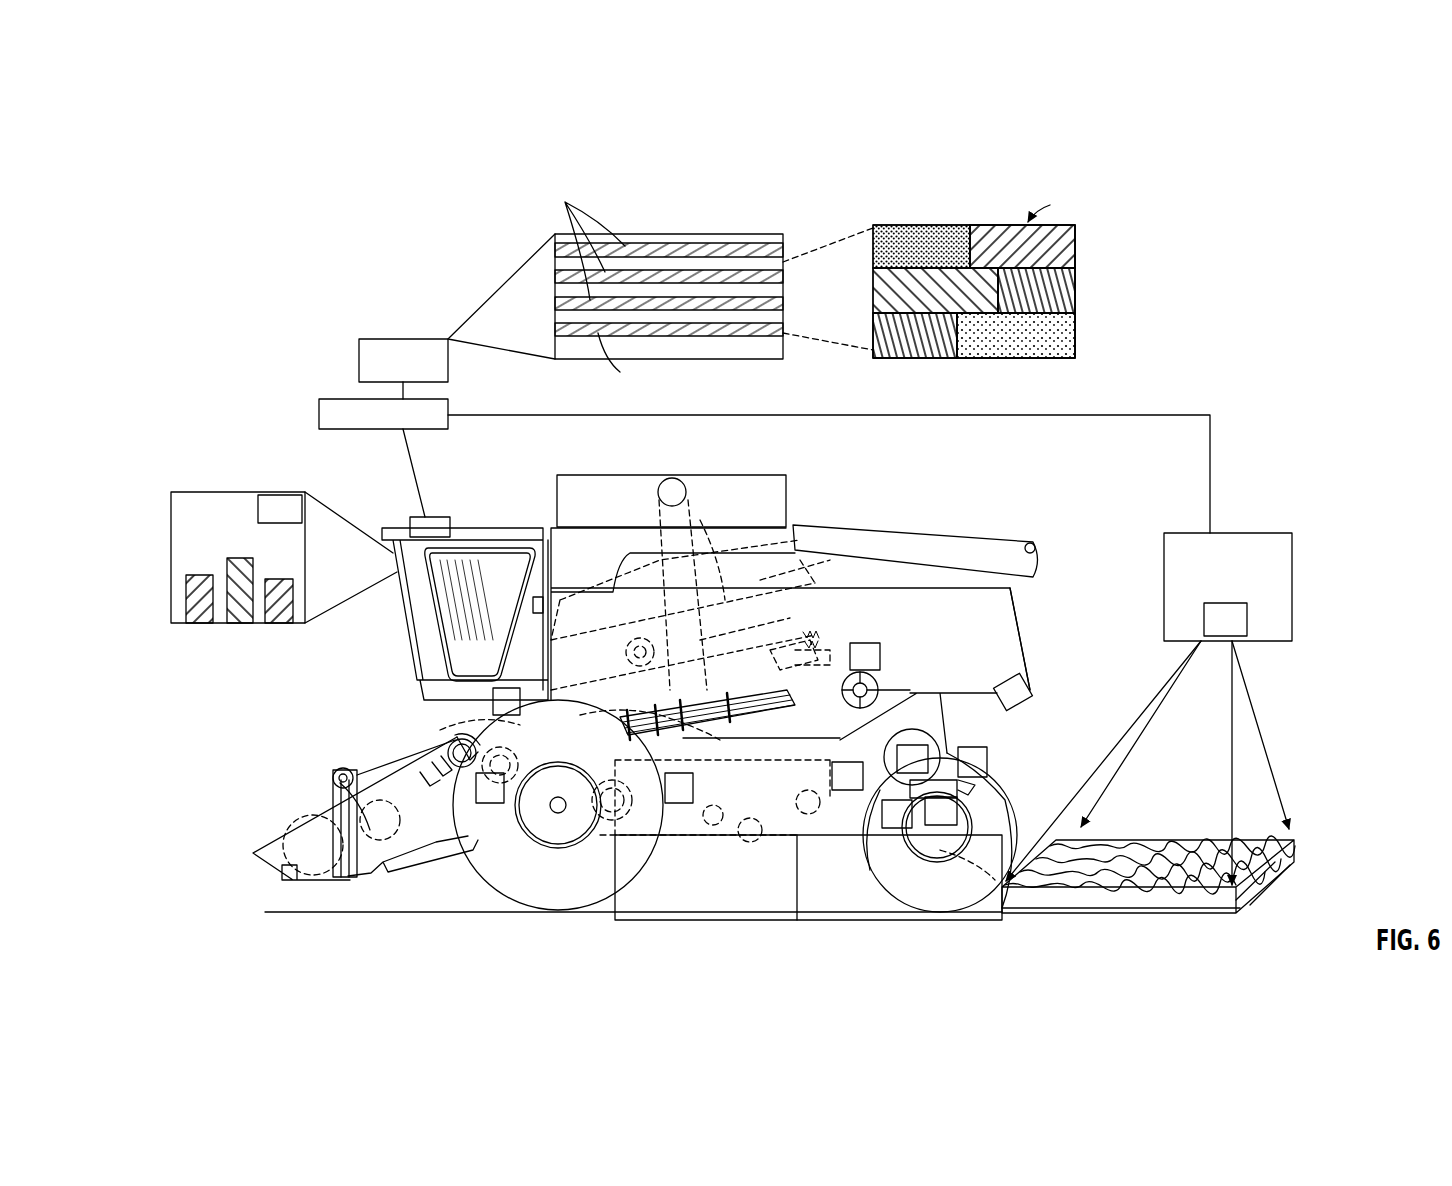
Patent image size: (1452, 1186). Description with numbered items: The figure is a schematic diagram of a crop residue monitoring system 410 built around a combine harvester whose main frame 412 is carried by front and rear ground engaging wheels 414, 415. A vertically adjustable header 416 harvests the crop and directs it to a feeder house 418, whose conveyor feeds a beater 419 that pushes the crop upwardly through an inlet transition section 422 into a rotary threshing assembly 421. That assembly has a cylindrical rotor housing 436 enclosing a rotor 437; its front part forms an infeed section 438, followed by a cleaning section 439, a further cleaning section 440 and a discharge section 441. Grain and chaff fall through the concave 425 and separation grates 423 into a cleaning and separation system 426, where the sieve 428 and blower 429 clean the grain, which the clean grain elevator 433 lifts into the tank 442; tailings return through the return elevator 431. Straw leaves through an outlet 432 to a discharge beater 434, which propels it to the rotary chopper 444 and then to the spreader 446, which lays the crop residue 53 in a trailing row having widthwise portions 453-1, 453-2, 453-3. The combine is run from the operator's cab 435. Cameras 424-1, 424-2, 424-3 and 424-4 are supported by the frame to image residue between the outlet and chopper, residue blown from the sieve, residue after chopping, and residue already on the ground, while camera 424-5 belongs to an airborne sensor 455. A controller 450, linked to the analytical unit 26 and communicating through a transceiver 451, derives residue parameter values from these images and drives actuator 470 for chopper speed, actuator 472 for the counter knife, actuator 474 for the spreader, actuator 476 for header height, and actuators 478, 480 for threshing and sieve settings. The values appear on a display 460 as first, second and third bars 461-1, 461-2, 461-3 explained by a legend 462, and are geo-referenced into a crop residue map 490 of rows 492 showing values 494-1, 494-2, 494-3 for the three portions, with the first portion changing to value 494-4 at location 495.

The analytical unit 26 is at (484, 445).
The crop residue 53 is at (1160, 840).
The crop residue monitoring system 410 is at (312, 238).
The main frame 412 is at (1023, 632).
The front ground engaging wheels 414 is at (455, 740).
The rear ground engaging wheels 415 is at (870, 878).
The header 416 is at (293, 807).
The feeder house 418 is at (420, 776).
The beater 419 is at (490, 735).
The rotary threshing assembly 421 is at (605, 674).
The inlet transition section 422 is at (970, 525).
The separation grates 423 is at (740, 706).
The camera 424-1 is at (880, 657).
The camera 424-2 is at (895, 817).
The camera 424-3 is at (972, 835).
The camera 424-4 is at (1030, 682).
The camera 424-5 is at (1249, 619).
The concave 425 is at (642, 793).
The cleaning and separation system 426 is at (700, 738).
The chaffer or sieve 428 is at (822, 793).
The blower 429 is at (610, 835).
The return elevator 431 is at (796, 812).
The outlet 432 is at (830, 652).
The clean grain elevator 433 is at (671, 582).
The discharge beater 434 is at (868, 683).
The operator's cab 435 is at (465, 528).
The rotor housing 436 is at (778, 622).
The rotor 437 is at (792, 634).
The infeed section 438 is at (527, 680).
The cleaning section 439 is at (618, 648).
The cleaning section 440 is at (725, 628).
The discharge section 441 is at (810, 606).
The tank 442 is at (805, 540).
The rotary chopper 444 is at (878, 728).
The spreader 446 is at (990, 788).
The controller 450 is at (319, 414).
The transceiver 451 is at (418, 517).
The widthwise portion 453-1 is at (1080, 338).
The widthwise portion 453-2 is at (1080, 282).
The widthwise portion 453-3 is at (1080, 250).
The airborne sensor 455 is at (1292, 569).
The display 460 is at (402, 585).
The first bar 461-1 is at (197, 625).
The second bar 461-2 is at (240, 625).
The third bar 461-3 is at (282, 625).
The legend 462 is at (272, 494).
The actuator 470 is at (922, 745).
The actuator 472 is at (905, 832).
The actuator 474 is at (988, 752).
The actuator 476 is at (495, 803).
The actuator 478 is at (672, 806).
The actuator 480 is at (520, 688).
The crop residue map 490 is at (768, 210).
The crop residue rows 492 is at (818, 287).
The first value 494-1 is at (1045, 350).
The second value 494-2 is at (1060, 290).
The third value 494-3 is at (1070, 238).
The fourth value 494-4 is at (898, 345).
The geo-referenced location 495 is at (957, 362).